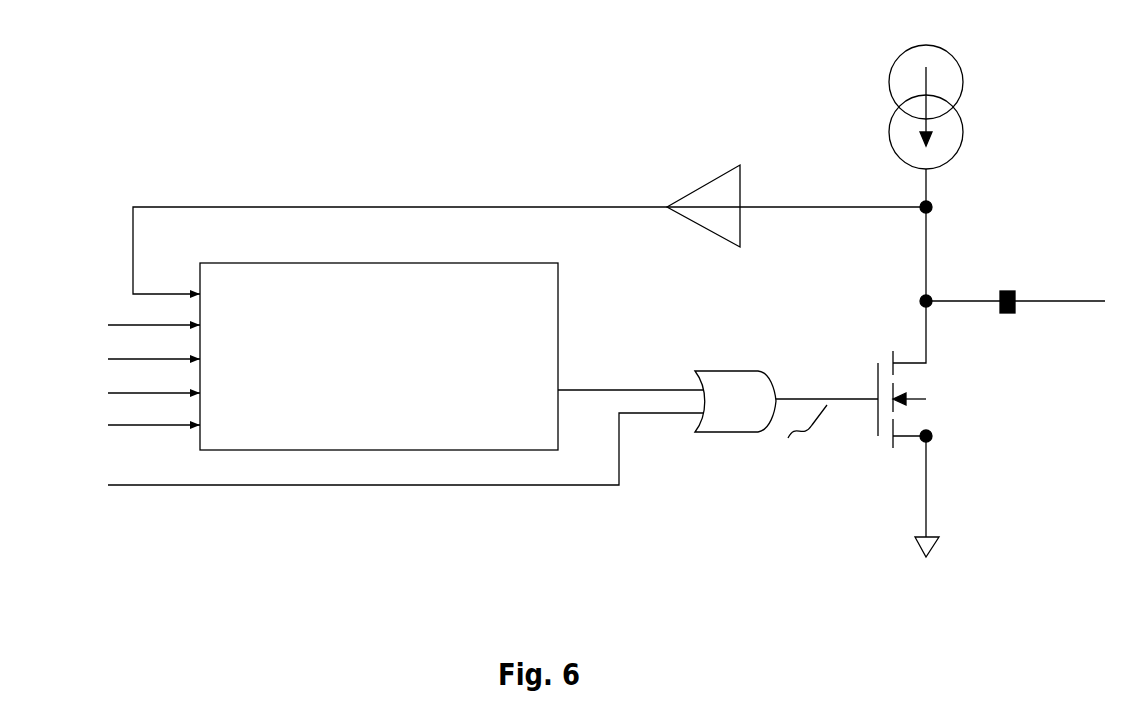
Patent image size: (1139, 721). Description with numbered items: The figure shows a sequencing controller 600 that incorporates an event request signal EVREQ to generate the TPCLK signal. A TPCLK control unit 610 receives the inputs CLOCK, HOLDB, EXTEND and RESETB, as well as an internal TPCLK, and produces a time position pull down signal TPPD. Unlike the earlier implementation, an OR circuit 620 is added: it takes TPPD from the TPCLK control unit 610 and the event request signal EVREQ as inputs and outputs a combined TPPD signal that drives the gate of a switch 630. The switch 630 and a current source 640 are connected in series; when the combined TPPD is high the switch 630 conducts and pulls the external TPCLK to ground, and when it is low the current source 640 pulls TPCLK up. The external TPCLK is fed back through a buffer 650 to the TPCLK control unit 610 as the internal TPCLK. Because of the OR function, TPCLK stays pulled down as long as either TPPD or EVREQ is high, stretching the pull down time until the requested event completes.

The sequencing controller 600 is at (152, 80).
The TPCLK control unit 610 is at (558, 313).
The OR circuit 620 is at (762, 370).
The switch 630 is at (932, 391).
The current source 640 is at (965, 72).
The buffer 650 is at (740, 183).